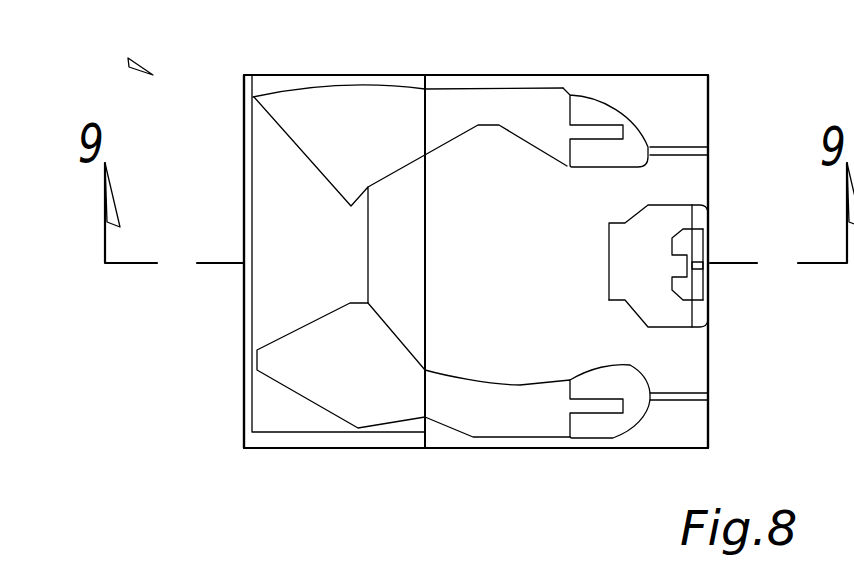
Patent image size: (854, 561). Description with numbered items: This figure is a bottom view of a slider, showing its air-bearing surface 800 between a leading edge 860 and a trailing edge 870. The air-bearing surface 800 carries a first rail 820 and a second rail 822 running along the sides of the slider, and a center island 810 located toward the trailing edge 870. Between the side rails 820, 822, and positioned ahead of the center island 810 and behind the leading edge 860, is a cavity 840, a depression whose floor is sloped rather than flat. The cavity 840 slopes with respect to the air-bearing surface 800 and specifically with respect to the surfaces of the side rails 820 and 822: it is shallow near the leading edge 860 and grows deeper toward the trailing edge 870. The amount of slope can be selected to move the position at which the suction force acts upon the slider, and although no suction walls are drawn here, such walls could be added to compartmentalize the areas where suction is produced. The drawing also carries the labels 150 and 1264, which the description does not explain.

The air-bearing surface 800 is at (258, 82).
The center island 810 is at (658, 218).
The first rail 820 is at (532, 102).
The second rail 822 is at (510, 425).
The cavity 840 is at (417, 207).
The leading edge 860 is at (244, 288).
The trailing edge 870 is at (710, 340).
The latch 150 is at (710, 270).
The insertion direction 1264 is at (129, 67).